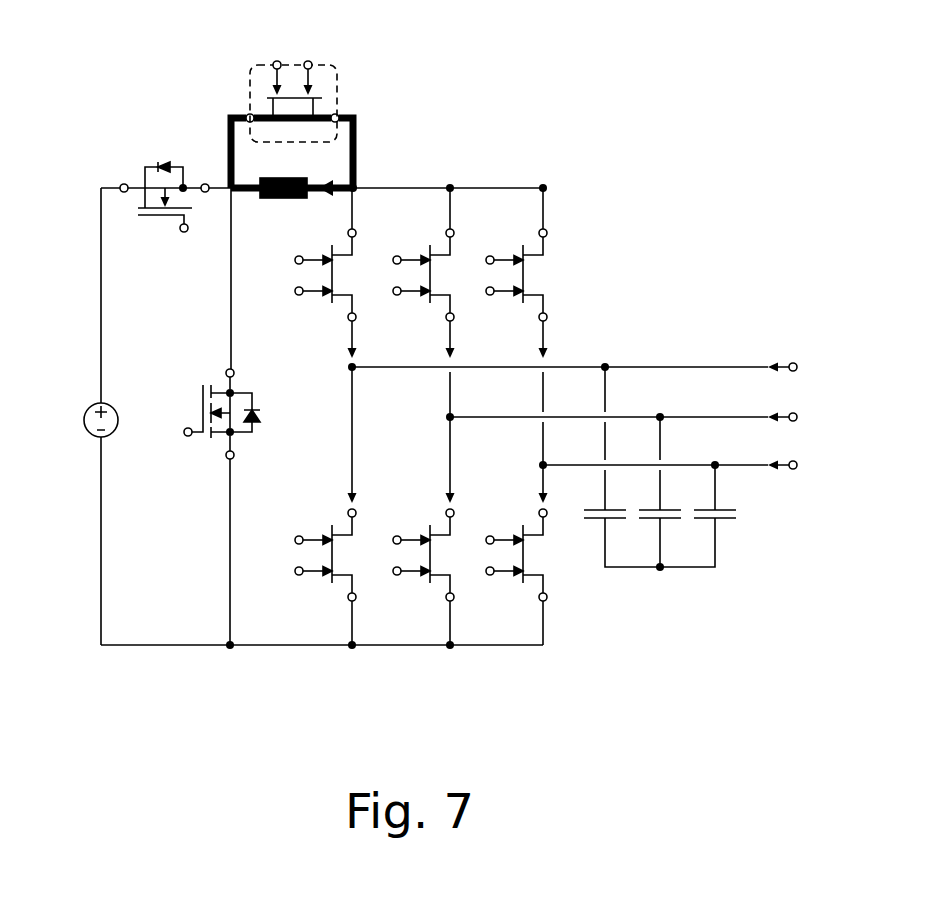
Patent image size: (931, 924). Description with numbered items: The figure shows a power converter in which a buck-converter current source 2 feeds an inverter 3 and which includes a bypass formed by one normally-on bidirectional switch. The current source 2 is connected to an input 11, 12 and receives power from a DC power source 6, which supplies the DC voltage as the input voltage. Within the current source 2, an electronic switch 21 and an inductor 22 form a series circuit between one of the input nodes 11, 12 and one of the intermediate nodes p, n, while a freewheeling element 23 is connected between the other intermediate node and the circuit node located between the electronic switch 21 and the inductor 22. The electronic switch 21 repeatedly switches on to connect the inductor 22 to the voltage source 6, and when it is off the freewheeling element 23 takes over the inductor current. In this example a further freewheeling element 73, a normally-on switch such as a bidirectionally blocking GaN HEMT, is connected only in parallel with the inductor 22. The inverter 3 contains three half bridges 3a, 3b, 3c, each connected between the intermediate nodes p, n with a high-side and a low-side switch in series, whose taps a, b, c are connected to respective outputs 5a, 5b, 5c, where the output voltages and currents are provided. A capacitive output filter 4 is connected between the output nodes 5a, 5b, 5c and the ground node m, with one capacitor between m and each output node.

The current source 2 is at (158, 200).
The inverter 3 is at (439, 404).
The first half bridge 3a is at (350, 678).
The second half bridge 3b is at (450, 678).
The third half bridge 3c is at (540, 678).
The output filter 4 is at (678, 342).
The first output node 5a is at (592, 356).
The second output node 5b is at (641, 406).
The third output node 5c is at (686, 453).
The power source 6 is at (85, 418).
The input node 11 is at (118, 173).
The input node 12 is at (159, 666).
The electronic switch 21 is at (158, 257).
The inductor 22 is at (282, 207).
The freewheeling element 23 is at (202, 480).
The freewheeling element 73 is at (352, 100).